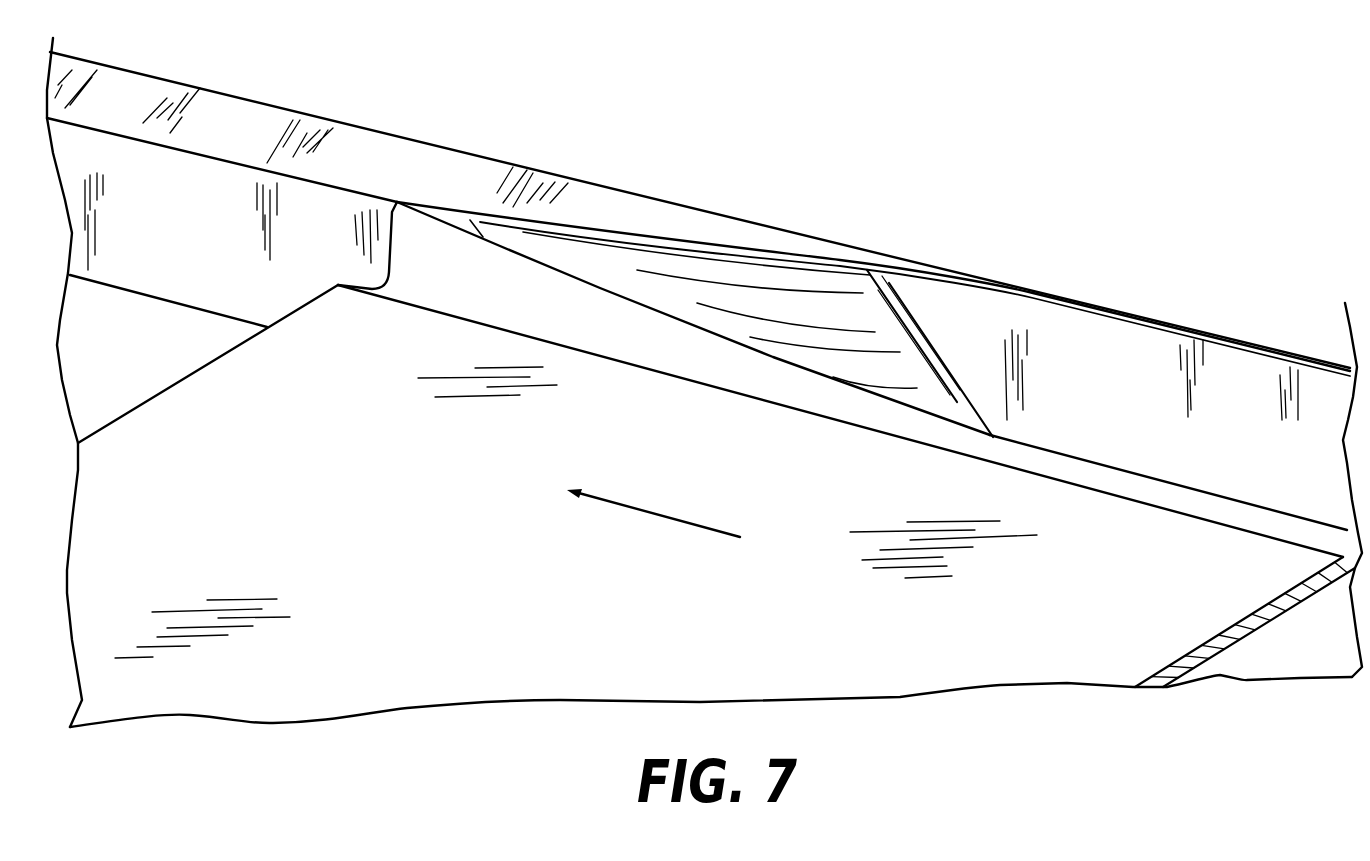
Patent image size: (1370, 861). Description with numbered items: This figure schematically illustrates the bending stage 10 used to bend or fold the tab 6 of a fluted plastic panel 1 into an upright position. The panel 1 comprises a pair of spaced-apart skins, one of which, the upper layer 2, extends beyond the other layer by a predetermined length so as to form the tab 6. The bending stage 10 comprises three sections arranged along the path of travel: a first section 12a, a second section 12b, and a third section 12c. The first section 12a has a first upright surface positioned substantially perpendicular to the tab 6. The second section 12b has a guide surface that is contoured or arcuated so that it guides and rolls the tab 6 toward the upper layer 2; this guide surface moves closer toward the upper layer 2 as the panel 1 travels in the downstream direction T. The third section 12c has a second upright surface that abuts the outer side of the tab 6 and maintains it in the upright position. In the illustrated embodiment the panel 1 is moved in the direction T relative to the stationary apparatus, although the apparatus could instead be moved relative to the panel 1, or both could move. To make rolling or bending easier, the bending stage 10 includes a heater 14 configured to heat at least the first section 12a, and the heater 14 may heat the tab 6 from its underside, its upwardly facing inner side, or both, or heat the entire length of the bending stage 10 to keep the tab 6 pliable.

The panel 1 is at (381, 495).
The upper layer 2 is at (312, 333).
The tab 6 is at (420, 239).
The bending stage 10 is at (705, 152).
The first section 12a is at (1093, 356).
The second section 12b is at (815, 294).
The third section 12c is at (175, 238).
The heater 14 is at (1228, 510).
The traveling or downstream direction T is at (648, 512).